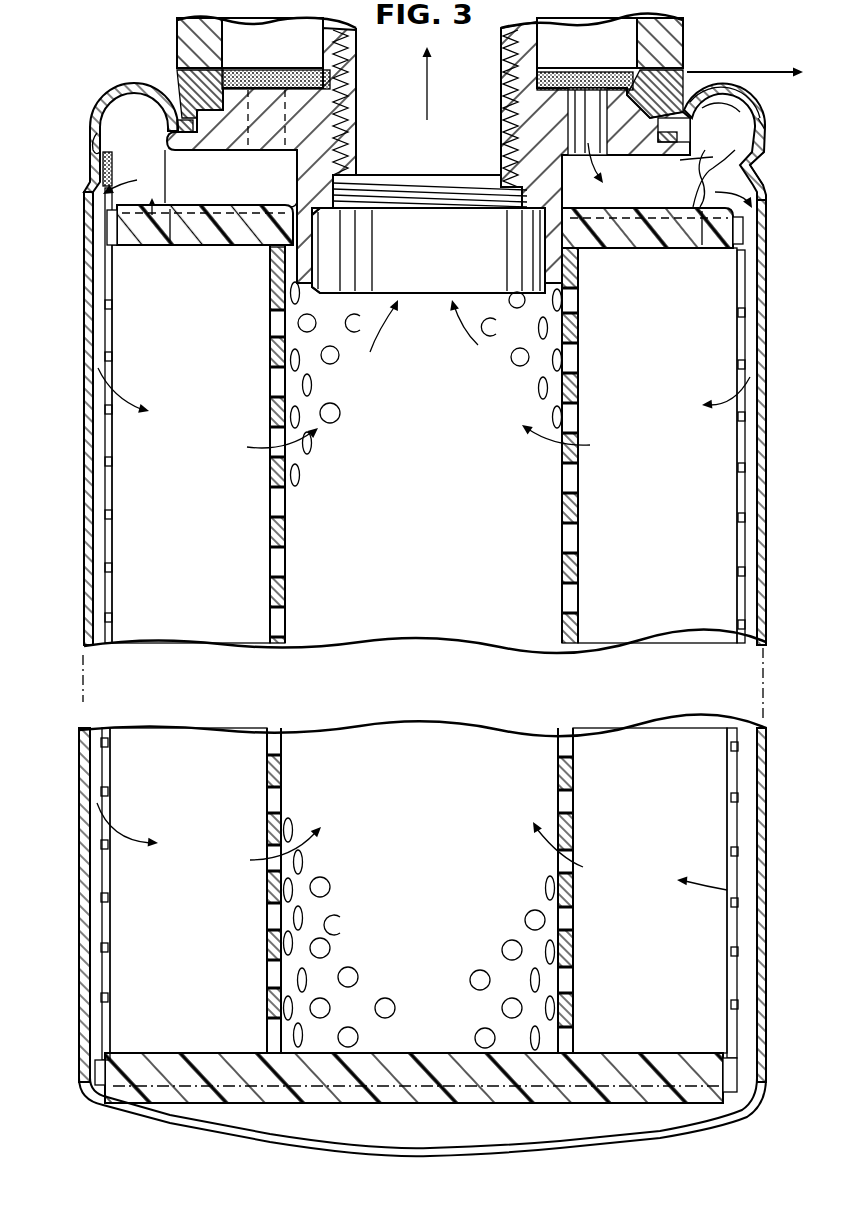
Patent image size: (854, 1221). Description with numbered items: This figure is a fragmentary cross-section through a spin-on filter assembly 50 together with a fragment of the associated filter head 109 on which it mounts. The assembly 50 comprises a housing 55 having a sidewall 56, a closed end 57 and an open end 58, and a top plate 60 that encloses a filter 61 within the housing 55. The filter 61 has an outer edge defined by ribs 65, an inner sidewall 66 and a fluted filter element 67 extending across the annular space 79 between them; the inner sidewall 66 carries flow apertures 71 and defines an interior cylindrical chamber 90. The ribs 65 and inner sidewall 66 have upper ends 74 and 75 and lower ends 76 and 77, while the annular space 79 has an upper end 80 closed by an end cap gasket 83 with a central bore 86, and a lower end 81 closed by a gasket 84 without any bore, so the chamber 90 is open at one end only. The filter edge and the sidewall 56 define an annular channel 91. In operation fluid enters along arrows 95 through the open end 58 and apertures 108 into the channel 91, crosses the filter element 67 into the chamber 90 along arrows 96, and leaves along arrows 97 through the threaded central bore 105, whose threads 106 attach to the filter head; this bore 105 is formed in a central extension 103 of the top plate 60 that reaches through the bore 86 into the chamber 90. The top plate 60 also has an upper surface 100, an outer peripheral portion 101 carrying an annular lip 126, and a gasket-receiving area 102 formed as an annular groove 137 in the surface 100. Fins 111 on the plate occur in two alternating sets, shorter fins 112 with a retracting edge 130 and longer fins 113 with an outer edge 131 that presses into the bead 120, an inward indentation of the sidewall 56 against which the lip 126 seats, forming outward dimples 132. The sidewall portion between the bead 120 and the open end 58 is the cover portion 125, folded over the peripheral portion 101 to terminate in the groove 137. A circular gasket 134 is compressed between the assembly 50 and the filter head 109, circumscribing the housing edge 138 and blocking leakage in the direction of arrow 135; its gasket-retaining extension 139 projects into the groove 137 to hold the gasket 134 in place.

The filter assembly 50 is at (76, 510).
The housing 55 is at (770, 440).
The sidewall 56 is at (766, 548).
The closed end 57 is at (473, 1157).
The open end 58 is at (696, 78).
The top plate 60 is at (543, 78).
The filter 61 is at (750, 598).
The ribs 65 is at (745, 513).
The inner sidewall 66 is at (565, 477).
The filter element 67 is at (633, 618).
The flow apertures 71 is at (565, 562).
The upper end of ribs 74 is at (745, 233).
The upper end of inner sidewall 75 is at (593, 148).
The lower end of ribs 76 is at (738, 1074).
The lower end of inner sidewall 77 is at (560, 1060).
The annular space 79 is at (150, 531).
The upper end of annular space 80 is at (205, 281).
The lower end of annular space 81 is at (190, 1047).
The end cap gasket 83 is at (247, 246).
The gasket 84 is at (213, 1064).
The central bore 86 is at (294, 226).
The interior cylindrical chamber 90 is at (427, 578).
The annular channel 91 is at (760, 280).
The inlet flow arrows 95 is at (781, 186).
The filtering flow arrows 96 is at (132, 392).
The outlet flow arrows 97 is at (432, 60).
The upper surface 100 is at (297, 64).
The outer peripheral portion 101 is at (735, 103).
The gasket-receiving area 102 is at (642, 72).
The central extension 103 is at (500, 297).
The central bore 105 is at (446, 281).
The threads 106 is at (455, 213).
The apertures 108 is at (257, 63).
The filter head 109 is at (168, 34).
The fins 111 is at (150, 220).
The first set of fins 112 is at (627, 202).
The second set of fins 113 is at (170, 224).
The bead 120 is at (760, 167).
The cover portion 125 is at (727, 86).
The annular lip 126 is at (92, 133).
The retracting edge 130 is at (663, 205).
The outer edge 131 is at (96, 171).
The dimples 132 is at (91, 160).
The gasket 134 is at (186, 81).
The leakage direction arrow 135 is at (766, 92).
The annular groove 137 is at (108, 168).
The edge 138 is at (176, 128).
The gasket-retaining extension 139 is at (193, 144).